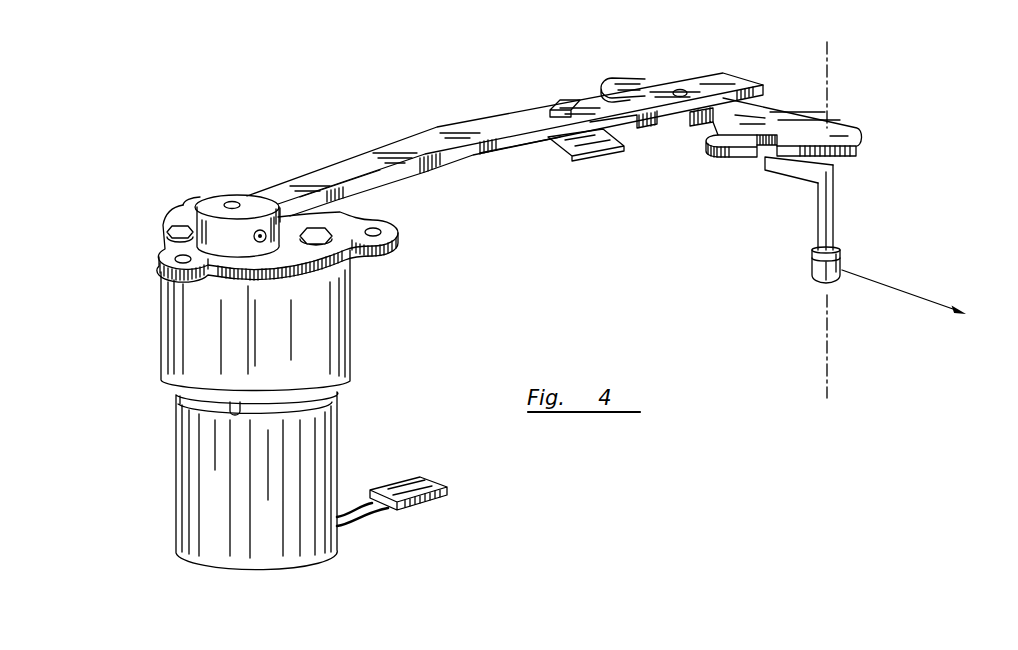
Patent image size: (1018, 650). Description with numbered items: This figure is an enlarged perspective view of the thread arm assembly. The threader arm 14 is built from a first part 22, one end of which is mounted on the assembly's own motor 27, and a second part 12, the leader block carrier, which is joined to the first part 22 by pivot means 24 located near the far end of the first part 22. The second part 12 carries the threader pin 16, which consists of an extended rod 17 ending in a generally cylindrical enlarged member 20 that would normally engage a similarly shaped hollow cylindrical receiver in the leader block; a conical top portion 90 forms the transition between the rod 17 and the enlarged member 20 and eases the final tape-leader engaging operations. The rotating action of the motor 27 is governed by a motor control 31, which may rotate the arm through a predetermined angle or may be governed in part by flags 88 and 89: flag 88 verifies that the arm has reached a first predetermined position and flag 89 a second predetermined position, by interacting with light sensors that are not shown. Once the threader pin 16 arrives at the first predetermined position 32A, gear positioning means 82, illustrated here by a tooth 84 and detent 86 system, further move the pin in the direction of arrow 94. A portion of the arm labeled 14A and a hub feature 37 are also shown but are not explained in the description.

The second part 12 is at (726, 115).
The threader arm 14 is at (505, 134).
The arm front section 14A is at (517, 160).
The threader pin 16 is at (855, 222).
The extended rod 17 is at (839, 203).
The enlarged member 20 is at (816, 265).
The first part 22 is at (320, 163).
The pivot means 24 is at (681, 89).
The motor 27 is at (152, 336).
The motor control 31 is at (428, 508).
The first predetermined position 32A is at (830, 66).
The pivot hole 37 is at (234, 201).
The gear positioning means 82 is at (690, 150).
The tooth 84 is at (709, 158).
The detent 86 is at (752, 160).
The flag 88 is at (600, 162).
The flag 89 is at (561, 100).
The conical top portion 90 is at (800, 250).
The arrow 94 is at (920, 300).